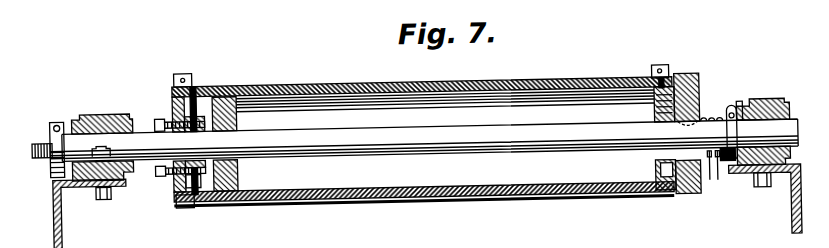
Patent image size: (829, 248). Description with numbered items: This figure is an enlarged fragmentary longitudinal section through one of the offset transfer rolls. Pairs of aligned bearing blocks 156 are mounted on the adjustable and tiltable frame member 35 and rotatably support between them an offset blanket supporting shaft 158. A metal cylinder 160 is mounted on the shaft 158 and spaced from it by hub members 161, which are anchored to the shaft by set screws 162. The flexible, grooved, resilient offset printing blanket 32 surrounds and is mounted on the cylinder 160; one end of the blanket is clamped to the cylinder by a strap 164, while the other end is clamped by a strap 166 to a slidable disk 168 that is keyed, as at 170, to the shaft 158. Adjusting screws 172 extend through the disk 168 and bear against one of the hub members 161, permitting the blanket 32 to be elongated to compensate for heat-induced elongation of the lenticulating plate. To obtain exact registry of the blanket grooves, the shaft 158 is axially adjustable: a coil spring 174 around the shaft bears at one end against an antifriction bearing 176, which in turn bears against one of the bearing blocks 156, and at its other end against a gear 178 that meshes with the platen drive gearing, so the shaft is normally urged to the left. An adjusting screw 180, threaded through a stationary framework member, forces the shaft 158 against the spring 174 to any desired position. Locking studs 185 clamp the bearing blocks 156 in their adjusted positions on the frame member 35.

The offset printing blanket 32 is at (283, 84).
The frame member 35 is at (60, 235).
The bearing block 156 is at (113, 97).
The offset blanket supporting shaft 158 is at (592, 141).
The metal cylinder 160 is at (535, 74).
The hub member 161 is at (238, 181).
The set screw 162 is at (70, 97).
The strap 164 is at (655, 75).
The strap 166 is at (193, 76).
The slidable disk 168 is at (176, 198).
The key 170 is at (430, 140).
The adjusting screw 172 is at (160, 114).
The coil spring 174 is at (714, 187).
The antifriction bearing 176 is at (741, 105).
The gear 178 is at (729, 112).
The adjusting screw 180 is at (38, 136).
The locking stud 185 is at (100, 193).